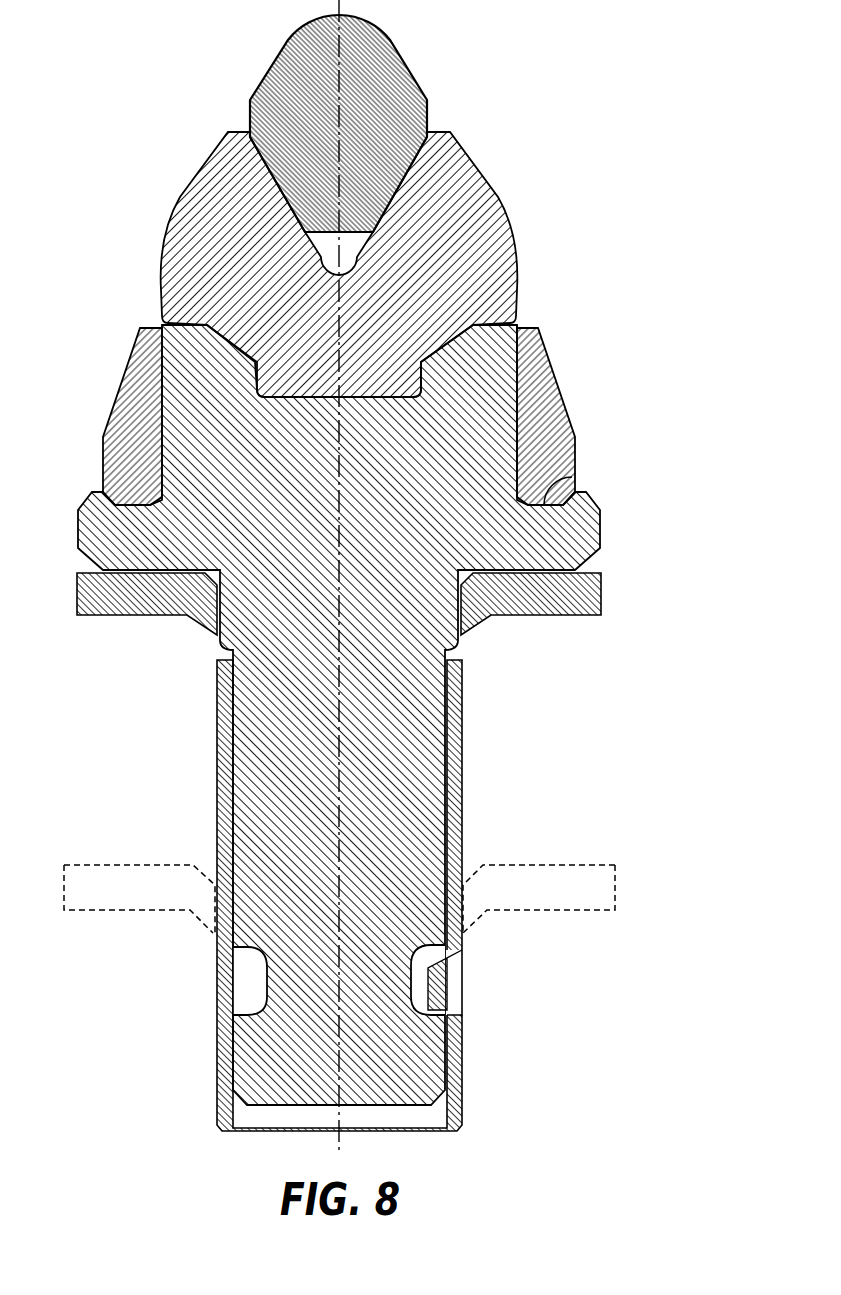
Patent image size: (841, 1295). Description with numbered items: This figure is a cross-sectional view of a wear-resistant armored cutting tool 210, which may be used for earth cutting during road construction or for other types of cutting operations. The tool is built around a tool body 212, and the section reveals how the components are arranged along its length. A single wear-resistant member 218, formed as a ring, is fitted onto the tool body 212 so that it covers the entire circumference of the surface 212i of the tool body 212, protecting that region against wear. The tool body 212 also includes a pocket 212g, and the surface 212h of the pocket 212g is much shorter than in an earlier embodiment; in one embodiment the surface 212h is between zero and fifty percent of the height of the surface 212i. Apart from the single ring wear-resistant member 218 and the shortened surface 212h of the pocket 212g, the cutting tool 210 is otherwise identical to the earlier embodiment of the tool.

The wear-resistant armored cutting tool 210 is at (563, 126).
The tool body 212 is at (395, 747).
The surface 212i is at (520, 372).
The wear-resistant member 218 is at (567, 399).
The pocket 212g is at (570, 467).
The surface 212h is at (578, 492).